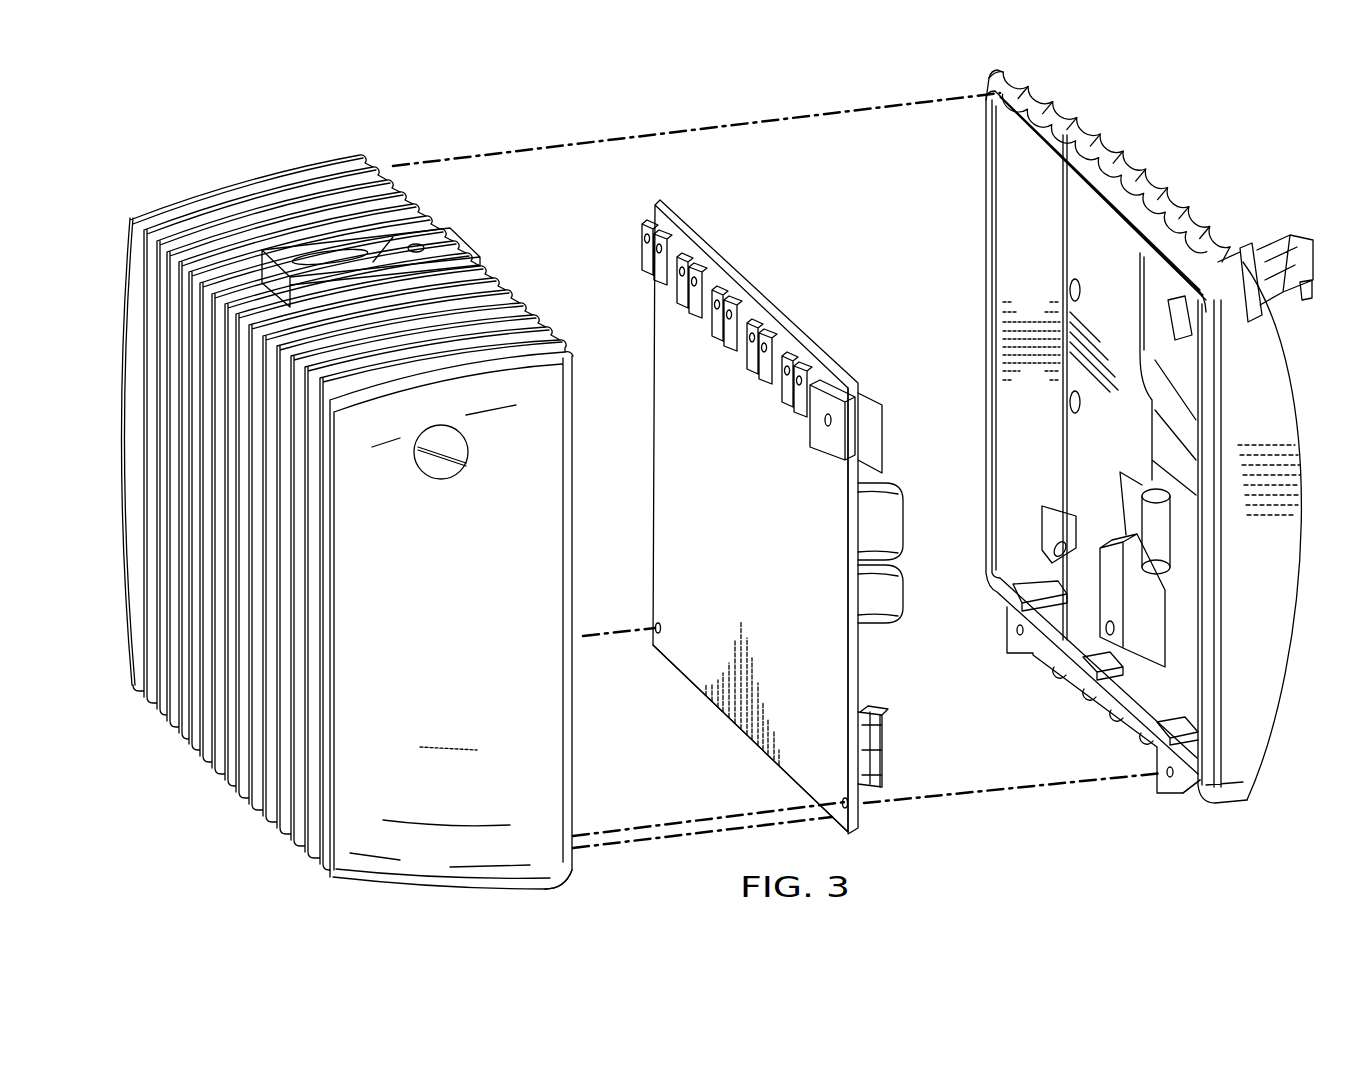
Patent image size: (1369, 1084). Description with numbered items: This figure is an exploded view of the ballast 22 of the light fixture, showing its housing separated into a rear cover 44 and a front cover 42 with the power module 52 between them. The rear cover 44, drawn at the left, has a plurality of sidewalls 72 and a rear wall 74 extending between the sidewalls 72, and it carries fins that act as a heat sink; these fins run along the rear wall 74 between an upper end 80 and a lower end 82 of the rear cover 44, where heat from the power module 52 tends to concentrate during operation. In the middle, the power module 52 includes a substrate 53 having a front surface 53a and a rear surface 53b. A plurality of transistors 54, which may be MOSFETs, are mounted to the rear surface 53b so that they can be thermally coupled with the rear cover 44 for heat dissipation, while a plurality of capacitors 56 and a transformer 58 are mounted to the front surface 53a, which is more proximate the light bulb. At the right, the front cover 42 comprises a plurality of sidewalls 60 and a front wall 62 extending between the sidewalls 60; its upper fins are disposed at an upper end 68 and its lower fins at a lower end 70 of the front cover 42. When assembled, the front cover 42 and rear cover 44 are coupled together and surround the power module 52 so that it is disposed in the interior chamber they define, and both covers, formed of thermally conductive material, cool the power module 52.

The ballast 22 is at (315, 510).
The rear cover 44 is at (315, 535).
The upper end 80 is at (480, 230).
The sidewalls 72 is at (118, 525).
The rear wall 74 is at (178, 690).
The lower end 82 is at (545, 905).
The power module 52 is at (770, 517).
The substrate 53 is at (761, 517).
The front surface 53a is at (860, 650).
The rear surface 53b is at (692, 660).
The transistors 54 is at (648, 252).
The transformer 58 is at (888, 448).
The capacitors 56 is at (893, 537).
The sidewalls 60 is at (1136, 457).
The front wall 62 is at (1058, 523).
The upper end 68 is at (1002, 62).
The front cover 42 is at (1155, 145).
The lower end 70 is at (1207, 825).